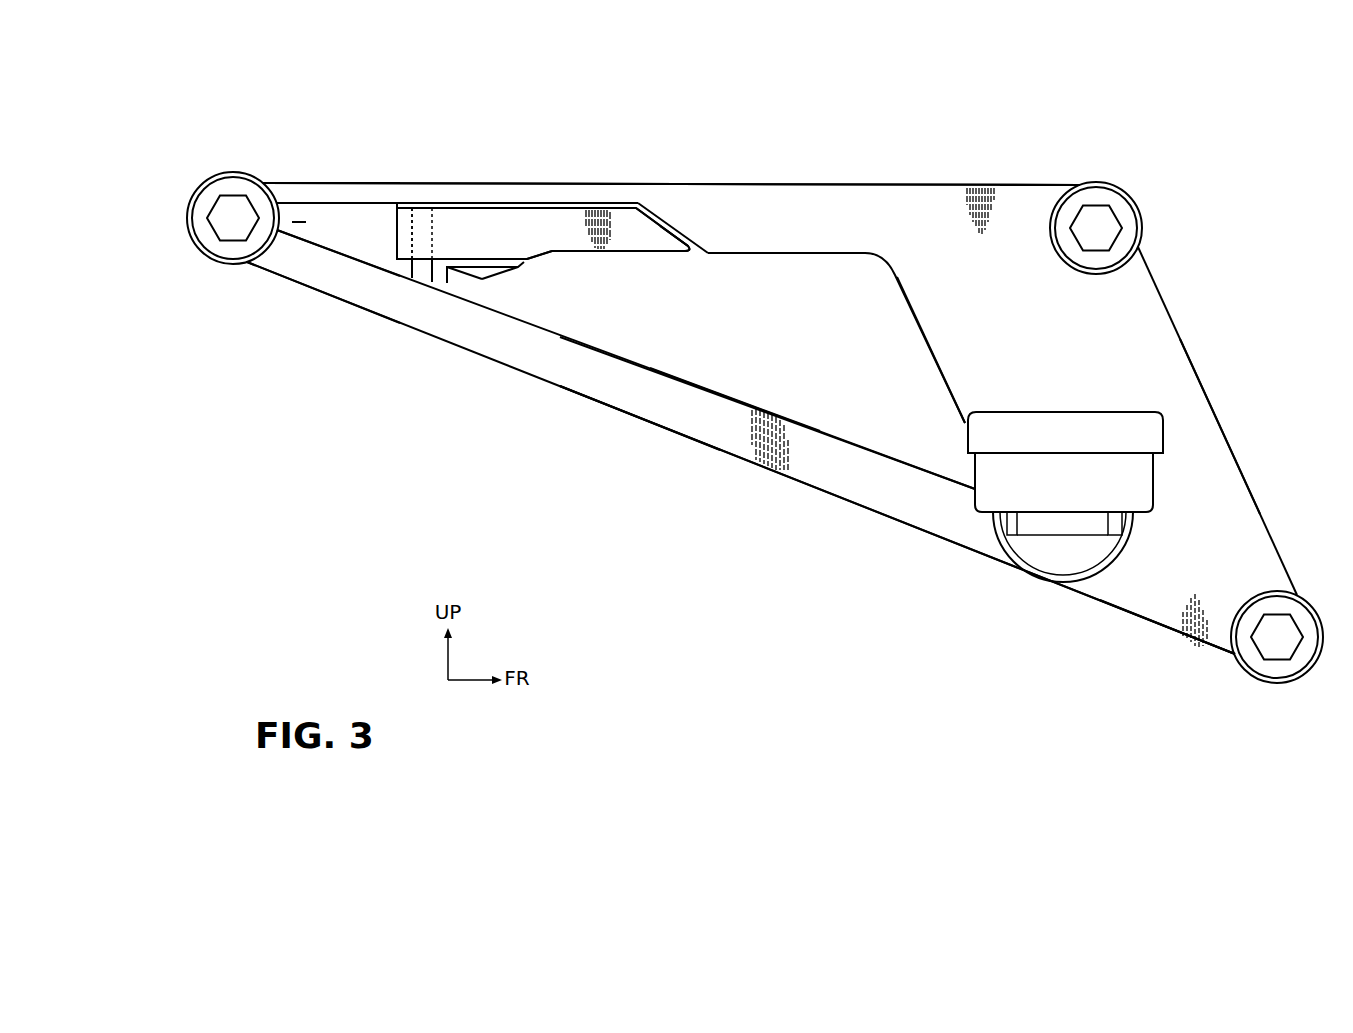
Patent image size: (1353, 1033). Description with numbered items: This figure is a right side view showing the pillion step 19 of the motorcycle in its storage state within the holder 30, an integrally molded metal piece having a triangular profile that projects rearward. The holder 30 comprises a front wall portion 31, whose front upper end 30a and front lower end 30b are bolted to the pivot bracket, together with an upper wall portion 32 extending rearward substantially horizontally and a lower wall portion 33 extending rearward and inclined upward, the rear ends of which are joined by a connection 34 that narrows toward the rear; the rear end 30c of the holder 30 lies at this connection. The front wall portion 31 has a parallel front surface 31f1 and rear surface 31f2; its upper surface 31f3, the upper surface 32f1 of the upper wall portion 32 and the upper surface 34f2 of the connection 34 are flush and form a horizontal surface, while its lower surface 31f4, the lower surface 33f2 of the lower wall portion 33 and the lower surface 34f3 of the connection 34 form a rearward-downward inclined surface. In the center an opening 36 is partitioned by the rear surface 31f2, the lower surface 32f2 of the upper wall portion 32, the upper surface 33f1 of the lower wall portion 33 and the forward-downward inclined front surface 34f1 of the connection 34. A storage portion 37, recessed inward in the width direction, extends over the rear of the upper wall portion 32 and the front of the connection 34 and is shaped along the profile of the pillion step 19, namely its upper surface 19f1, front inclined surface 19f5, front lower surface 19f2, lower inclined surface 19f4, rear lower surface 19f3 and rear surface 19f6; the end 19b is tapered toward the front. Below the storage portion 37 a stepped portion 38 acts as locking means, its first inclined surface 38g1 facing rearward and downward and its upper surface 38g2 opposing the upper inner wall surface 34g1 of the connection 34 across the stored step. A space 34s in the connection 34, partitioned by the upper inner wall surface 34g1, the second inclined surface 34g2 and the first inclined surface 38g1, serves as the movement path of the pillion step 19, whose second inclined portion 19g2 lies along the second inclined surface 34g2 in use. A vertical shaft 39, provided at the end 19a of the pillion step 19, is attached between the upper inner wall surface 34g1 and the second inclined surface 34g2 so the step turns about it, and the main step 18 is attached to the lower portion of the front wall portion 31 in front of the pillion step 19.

The main step 18 is at (1150, 487).
The pillion step 19 is at (580, 206).
The end of the pillion step 19a is at (423, 203).
The end of the pillion step 19b is at (690, 248).
The upper surface of the pillion step 19f1 is at (530, 203).
The front lower surface 19f2 is at (650, 253).
The rear lower surface 19f3 is at (500, 262).
The lower inclined surface 19f4 is at (562, 253).
The front inclined surface 19f5 is at (670, 223).
The rear surface of the pillion step 19f6 is at (390, 260).
The second inclined portion 19g2 is at (480, 280).
The holder 30 is at (930, 186).
The front upper end 30a is at (1140, 203).
The front lower end 30b is at (1285, 684).
The rear pivot 30c is at (222, 174).
The front wall portion 31 is at (1155, 340).
The front surface of the front wall portion 31f1 is at (1218, 413).
The rear surface of the front wall portion 31f2 is at (934, 360).
The upper surface of the front wall portion 31f3 is at (1048, 185).
The lower surface of the front wall portion 31f4 is at (1154, 622).
The upper wall portion 32 is at (720, 200).
The upper surface of the upper wall portion 32f1 is at (658, 183).
The lower surface of the upper wall portion 32f2 is at (805, 255).
The lower wall portion 33 is at (700, 420).
The upper surface of the lower wall portion 33f1 is at (733, 398).
The lower surface of the lower wall portion 33f2 is at (640, 418).
The connection 34 is at (283, 265).
The front surface of the connection 34f1 is at (495, 285).
The upper surface of the connection 34f2 is at (352, 182).
The lower surface of the connection 34f3 is at (330, 297).
The upper inner wall surface 34g1 is at (320, 203).
The second inclined surface 34g2 is at (325, 252).
The space 34s is at (298, 220).
The opening 36 is at (836, 404).
The storage portion 37 is at (502, 227).
The stepped portion 38 is at (432, 268).
The first inclined surface 38g1 is at (452, 275).
The upper surface of the stepped portion 38g2 is at (448, 225).
The shaft 39 is at (412, 268).